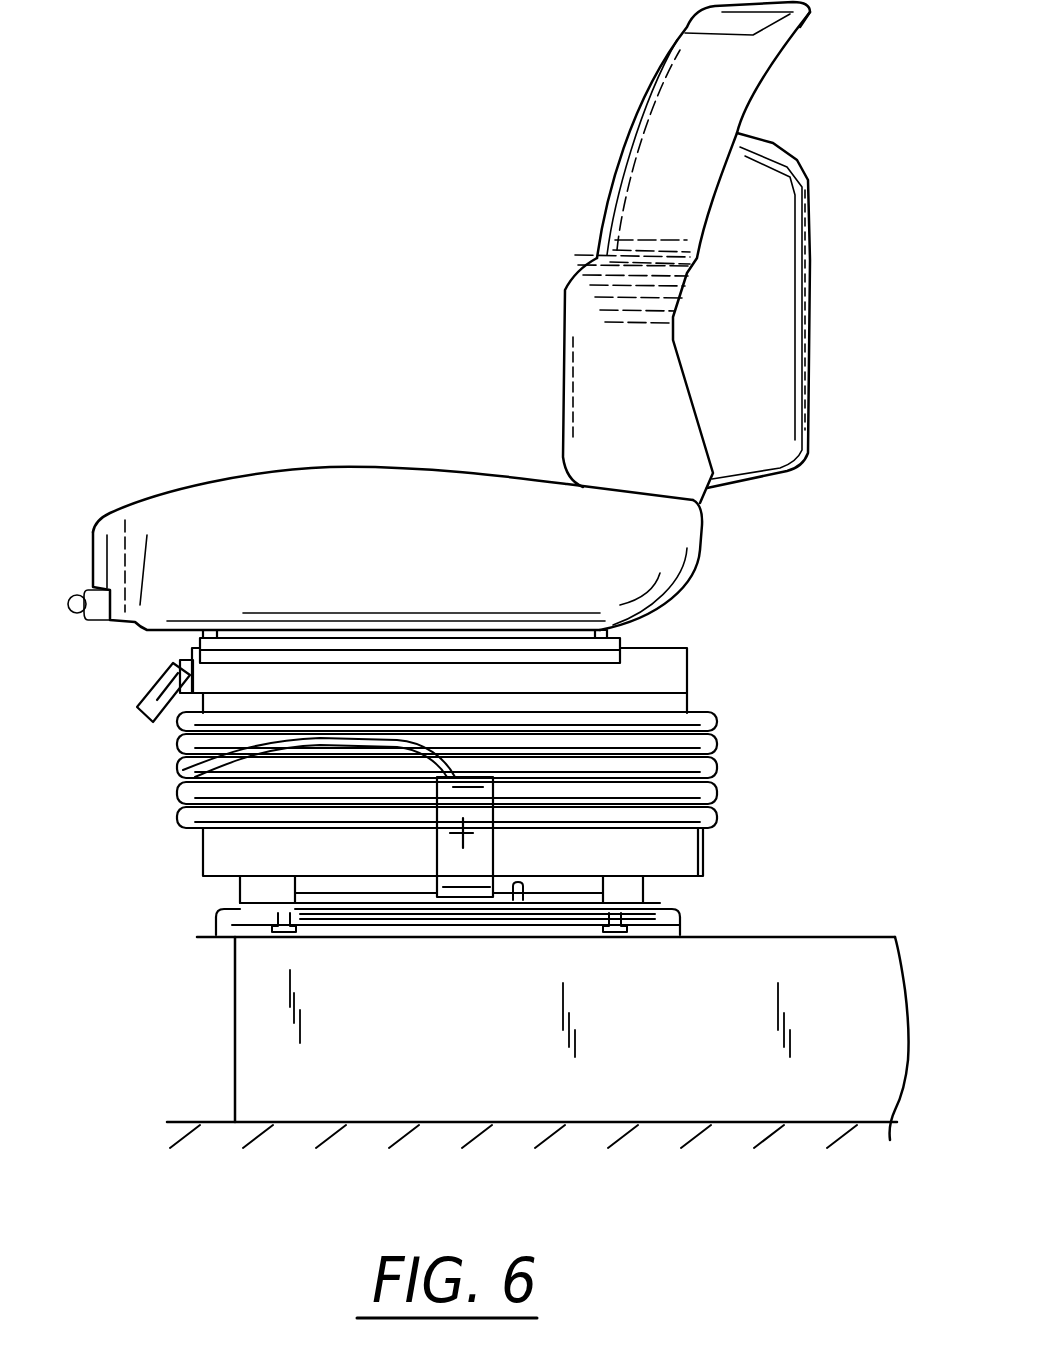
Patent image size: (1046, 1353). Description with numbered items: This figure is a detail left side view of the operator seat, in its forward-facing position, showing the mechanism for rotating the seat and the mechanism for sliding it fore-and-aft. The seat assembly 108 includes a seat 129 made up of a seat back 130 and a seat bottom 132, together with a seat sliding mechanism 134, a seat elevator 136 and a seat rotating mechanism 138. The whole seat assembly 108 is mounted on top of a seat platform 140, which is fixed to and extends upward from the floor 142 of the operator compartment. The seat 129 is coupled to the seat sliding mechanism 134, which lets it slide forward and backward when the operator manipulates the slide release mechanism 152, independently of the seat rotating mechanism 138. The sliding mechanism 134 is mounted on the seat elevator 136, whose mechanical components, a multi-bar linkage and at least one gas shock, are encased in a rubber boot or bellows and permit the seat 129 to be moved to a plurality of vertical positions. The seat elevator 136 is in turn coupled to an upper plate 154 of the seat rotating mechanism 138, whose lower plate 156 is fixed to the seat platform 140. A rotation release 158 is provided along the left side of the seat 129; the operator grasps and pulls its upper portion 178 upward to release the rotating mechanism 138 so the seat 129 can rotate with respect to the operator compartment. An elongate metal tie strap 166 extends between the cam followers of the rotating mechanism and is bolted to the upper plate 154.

The seat assembly 108 is at (424, 348).
The seat 129 is at (700, 547).
The seat back 130 is at (658, 79).
The seat bottom 132 is at (391, 425).
The seat sliding mechanism 134 is at (690, 668).
The seat elevator 136 is at (720, 740).
The seat rotating mechanism 138 is at (704, 914).
The seat platform 140 is at (497, 1060).
The floor 142 is at (198, 1120).
The slide release mechanism 152 is at (133, 702).
The upper plate 154 is at (238, 886).
The lower plate 156 is at (213, 918).
The rotation release 158 is at (458, 833).
The tie strap 166 is at (380, 925).
The upper portion 178 is at (180, 768).